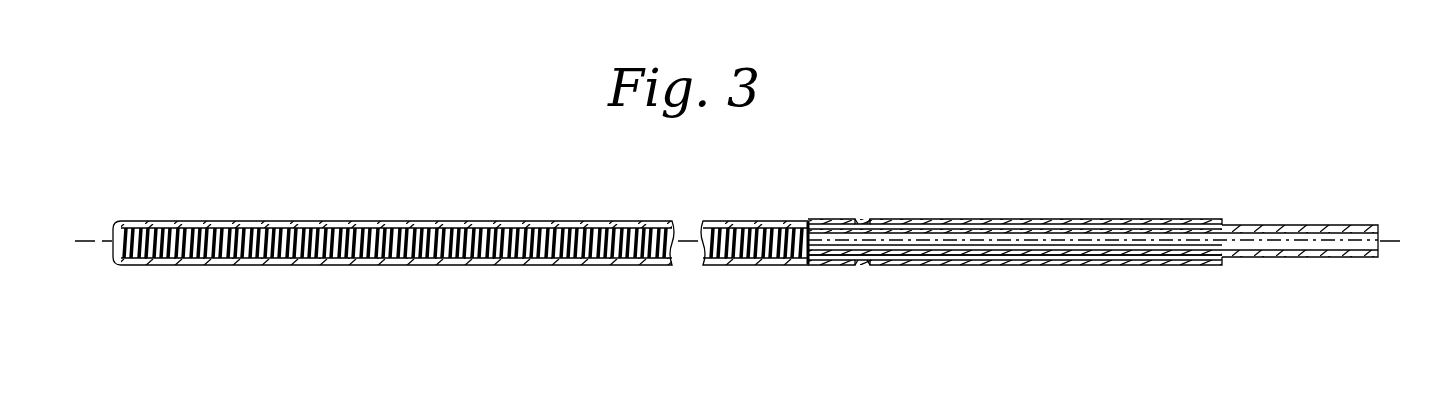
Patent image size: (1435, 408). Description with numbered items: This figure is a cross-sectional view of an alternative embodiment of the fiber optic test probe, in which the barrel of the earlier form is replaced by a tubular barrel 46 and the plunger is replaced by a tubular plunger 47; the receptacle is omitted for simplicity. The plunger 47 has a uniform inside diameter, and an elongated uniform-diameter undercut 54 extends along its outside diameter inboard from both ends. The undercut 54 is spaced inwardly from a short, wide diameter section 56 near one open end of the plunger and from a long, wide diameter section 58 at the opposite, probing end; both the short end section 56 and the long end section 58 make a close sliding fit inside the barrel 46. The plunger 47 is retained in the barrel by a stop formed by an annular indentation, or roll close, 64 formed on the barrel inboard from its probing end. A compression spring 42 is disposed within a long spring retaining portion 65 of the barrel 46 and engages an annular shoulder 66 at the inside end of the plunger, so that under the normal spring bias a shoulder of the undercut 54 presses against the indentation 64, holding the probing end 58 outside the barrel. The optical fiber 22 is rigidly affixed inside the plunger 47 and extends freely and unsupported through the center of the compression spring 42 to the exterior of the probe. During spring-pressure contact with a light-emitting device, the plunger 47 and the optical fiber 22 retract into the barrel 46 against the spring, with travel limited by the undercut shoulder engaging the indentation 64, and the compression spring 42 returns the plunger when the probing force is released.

The optical fiber 22 is at (965, 243).
The compression spring 42 is at (616, 185).
The tubular barrel 46 is at (720, 266).
The plunger 47 is at (1112, 265).
The undercut 54 is at (1100, 181).
The short wide diameter section 56 is at (825, 221).
The long wide diameter section 58 is at (1282, 236).
The annular indentation 64 is at (865, 221).
The spring retaining portion 65 is at (272, 265).
The annular shoulder 66 is at (800, 265).